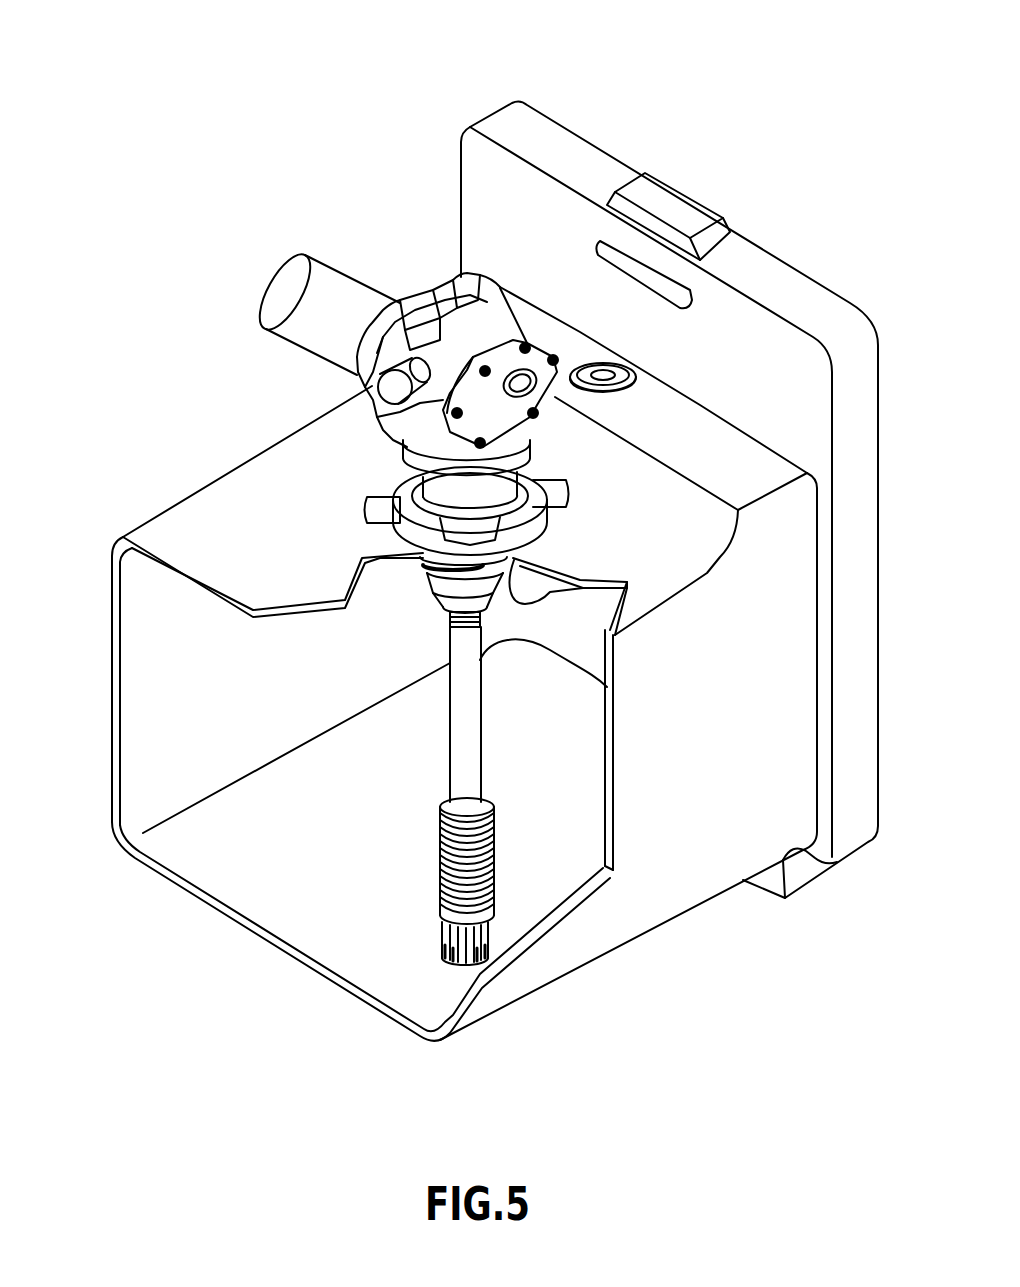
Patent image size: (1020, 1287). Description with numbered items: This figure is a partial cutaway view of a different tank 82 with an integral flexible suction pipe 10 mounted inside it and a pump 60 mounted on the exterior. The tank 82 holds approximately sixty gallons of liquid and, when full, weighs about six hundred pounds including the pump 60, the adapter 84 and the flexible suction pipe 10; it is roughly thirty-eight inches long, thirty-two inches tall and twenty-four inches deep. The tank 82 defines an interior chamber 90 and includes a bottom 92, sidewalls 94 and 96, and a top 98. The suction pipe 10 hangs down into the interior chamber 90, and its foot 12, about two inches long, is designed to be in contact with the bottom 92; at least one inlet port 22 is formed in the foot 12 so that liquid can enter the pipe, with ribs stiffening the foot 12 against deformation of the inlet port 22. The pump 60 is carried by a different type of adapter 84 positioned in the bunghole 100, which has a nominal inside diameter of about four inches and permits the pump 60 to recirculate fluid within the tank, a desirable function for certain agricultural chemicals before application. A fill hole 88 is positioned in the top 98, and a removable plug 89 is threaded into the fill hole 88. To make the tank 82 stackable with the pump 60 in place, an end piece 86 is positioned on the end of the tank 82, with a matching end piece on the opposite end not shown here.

The suction pipe 10 is at (515, 742).
The foot 12 is at (447, 949).
The inlet port 22 is at (487, 952).
The pump 60 is at (440, 337).
The tank 82 is at (263, 450).
The adapter 84 is at (368, 489).
The end piece 86 is at (813, 281).
The fill hole 88 is at (601, 372).
The removable plug 89 is at (631, 367).
The interior chamber 90 is at (238, 717).
The bottom 92 is at (307, 870).
The sidewall 94 is at (118, 748).
The sidewall 96 is at (608, 786).
The top 98 is at (195, 580).
The bunghole 100 is at (512, 579).